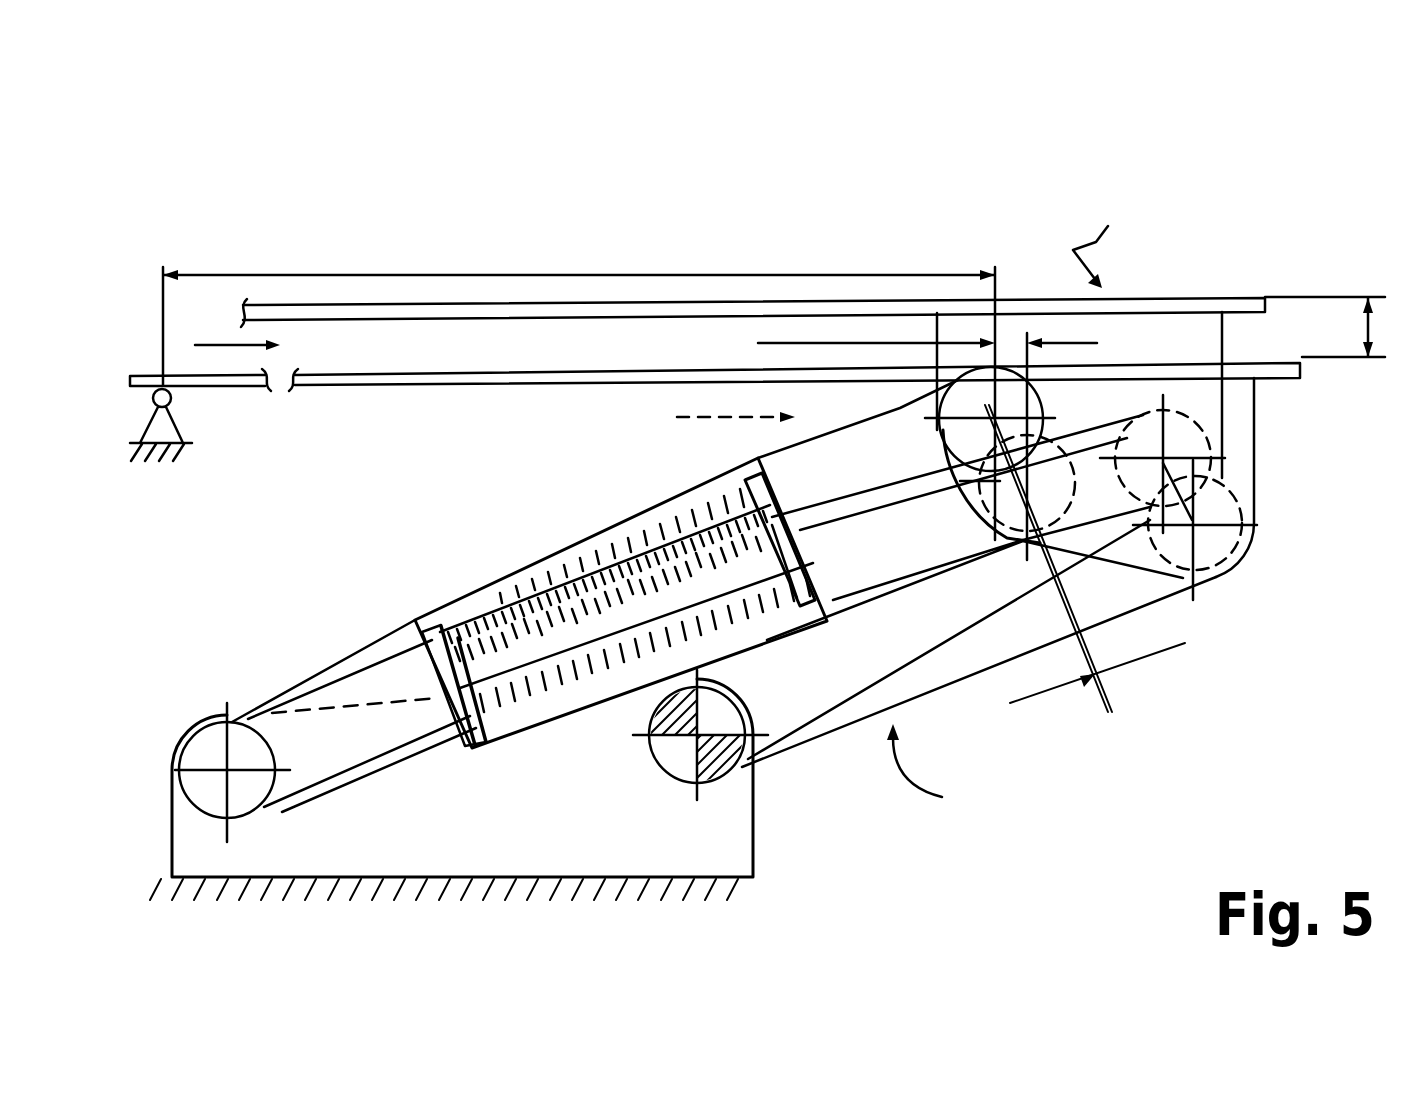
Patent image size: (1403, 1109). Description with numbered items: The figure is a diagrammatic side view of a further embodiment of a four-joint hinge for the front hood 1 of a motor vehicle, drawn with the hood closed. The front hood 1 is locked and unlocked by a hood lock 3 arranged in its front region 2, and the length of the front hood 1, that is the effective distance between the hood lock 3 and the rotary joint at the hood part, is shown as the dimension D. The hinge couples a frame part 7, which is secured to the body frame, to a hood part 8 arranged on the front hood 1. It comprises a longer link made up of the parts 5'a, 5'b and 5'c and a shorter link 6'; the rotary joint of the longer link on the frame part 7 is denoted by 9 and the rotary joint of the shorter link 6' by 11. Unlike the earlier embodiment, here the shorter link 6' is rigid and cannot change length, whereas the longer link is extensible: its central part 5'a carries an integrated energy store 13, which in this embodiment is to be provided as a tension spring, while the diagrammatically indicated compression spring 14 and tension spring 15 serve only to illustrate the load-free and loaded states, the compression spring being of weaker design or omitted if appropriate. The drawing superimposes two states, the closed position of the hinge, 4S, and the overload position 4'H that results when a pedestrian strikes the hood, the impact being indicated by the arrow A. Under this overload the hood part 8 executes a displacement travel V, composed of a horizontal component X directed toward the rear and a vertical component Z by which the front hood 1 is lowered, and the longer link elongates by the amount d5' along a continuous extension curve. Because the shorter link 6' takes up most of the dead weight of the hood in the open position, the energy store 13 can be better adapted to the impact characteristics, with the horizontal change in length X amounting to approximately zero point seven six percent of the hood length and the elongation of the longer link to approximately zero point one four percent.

The front hood 1 is at (419, 295).
The front region 2 is at (200, 383).
The hood lock 3 is at (146, 418).
The four-joint hinge in closed position S 4S is at (705, 420).
The four-joint hinge in overload position H 4'H is at (925, 782).
The central part of longer link 5'a is at (621, 598).
The end piece of longer link 5'b is at (348, 680).
The end piece of longer link 5'c is at (970, 503).
The shorter link 6' is at (1051, 558).
The frame part 7 is at (730, 820).
The hood part 8 is at (1256, 457).
The rotary joint 9 is at (212, 786).
The rotary joint 11 is at (685, 760).
The energy store 13 is at (509, 660).
The compression spring 14 is at (607, 586).
The tension spring 15 is at (645, 645).
The change in length of longer link d5' is at (1025, 750).
The arrow indicating pedestrian impact A is at (1100, 236).
The length of front hood D is at (625, 270).
The horizontal component X is at (927, 435).
The vertical component Z is at (1325, 327).
The displacement travel V is at (1178, 456).